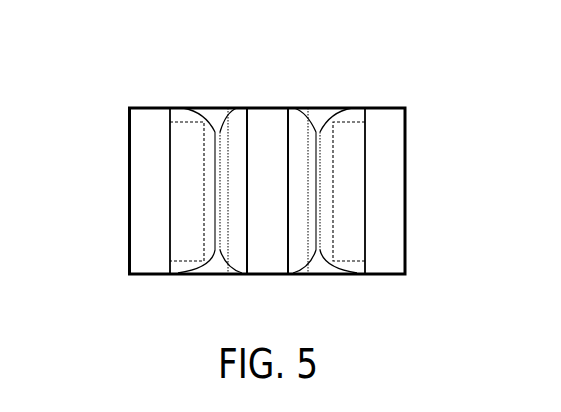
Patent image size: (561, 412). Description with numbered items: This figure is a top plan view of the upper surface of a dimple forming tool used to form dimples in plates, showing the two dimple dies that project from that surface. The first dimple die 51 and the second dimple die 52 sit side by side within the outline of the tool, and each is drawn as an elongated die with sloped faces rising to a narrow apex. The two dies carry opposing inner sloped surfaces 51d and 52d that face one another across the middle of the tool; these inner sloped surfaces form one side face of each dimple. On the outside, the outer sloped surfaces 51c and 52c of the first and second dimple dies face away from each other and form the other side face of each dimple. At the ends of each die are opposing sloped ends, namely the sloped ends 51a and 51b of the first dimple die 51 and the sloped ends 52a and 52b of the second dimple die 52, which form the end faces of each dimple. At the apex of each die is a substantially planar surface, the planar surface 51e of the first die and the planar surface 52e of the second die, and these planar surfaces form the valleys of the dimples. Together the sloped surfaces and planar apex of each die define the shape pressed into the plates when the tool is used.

The first dimple die 51 is at (214, 286).
The sloped end of first dimple die 51a is at (218, 268).
The sloped end of first dimple die 51b is at (210, 113).
The outer sloped surface of first dimple die 51c is at (187, 143).
The inner sloped surface of first dimple die 51d is at (242, 132).
The substantially planar surface of first dimple die 51e is at (213, 191).
The second dimple die 52 is at (319, 286).
The sloped end of second dimple die 52a is at (322, 263).
The sloped end of second dimple die 52b is at (327, 117).
The outer sloped surface of second dimple die 52c is at (358, 138).
The inner sloped surface of second dimple die 52d is at (298, 135).
The substantially planar surface of second dimple die 52e is at (321, 190).